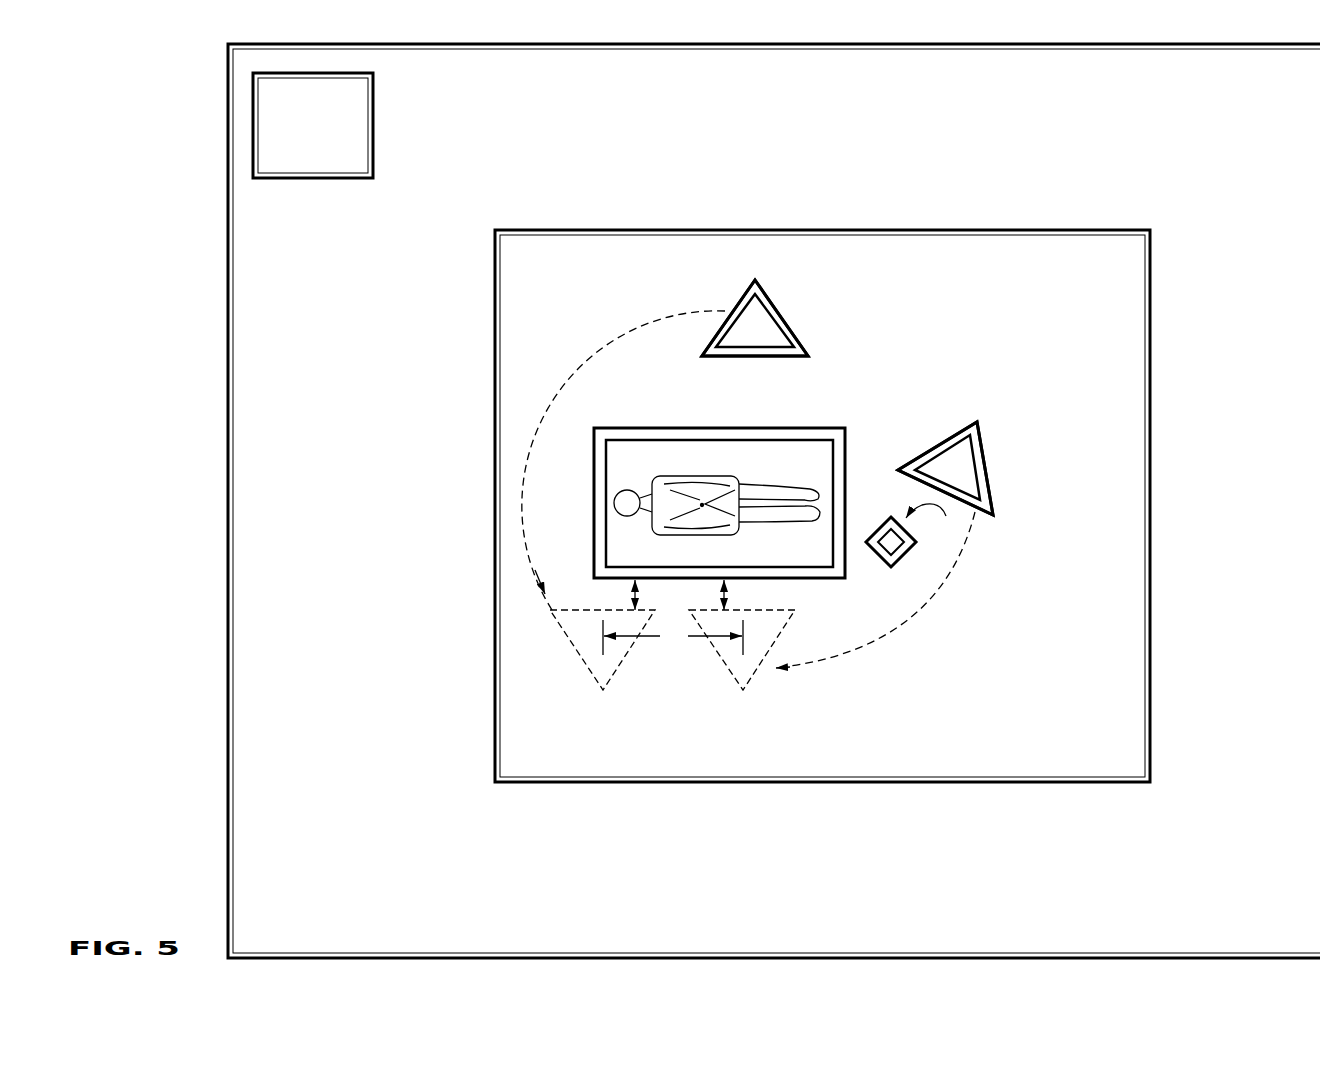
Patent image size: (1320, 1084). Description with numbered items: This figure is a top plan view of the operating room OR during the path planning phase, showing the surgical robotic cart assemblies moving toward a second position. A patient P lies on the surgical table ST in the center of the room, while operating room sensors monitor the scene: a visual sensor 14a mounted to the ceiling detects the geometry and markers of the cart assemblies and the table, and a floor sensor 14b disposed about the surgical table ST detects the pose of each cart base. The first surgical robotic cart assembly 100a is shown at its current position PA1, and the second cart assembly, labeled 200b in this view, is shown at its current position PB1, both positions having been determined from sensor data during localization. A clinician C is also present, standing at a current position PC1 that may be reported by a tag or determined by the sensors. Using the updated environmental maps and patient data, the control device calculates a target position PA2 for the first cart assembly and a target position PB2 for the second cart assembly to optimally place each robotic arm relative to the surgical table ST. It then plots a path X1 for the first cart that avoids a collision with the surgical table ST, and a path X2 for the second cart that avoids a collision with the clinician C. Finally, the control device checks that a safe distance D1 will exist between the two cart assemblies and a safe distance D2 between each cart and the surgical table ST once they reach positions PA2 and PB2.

The operating room OR is at (774, 501).
The visual sensor 14a is at (378, 118).
The floor sensor 14b is at (1156, 345).
The surgical table ST is at (818, 455).
The patient P is at (690, 488).
The first surgical robotic cart assembly 100a is at (766, 294).
The current position of first surgical robotic cart assembly PA1 is at (795, 320).
The second robotic arm / second marker 200b is at (990, 465).
The current position of second surgical robotic cart assembly PB1 is at (984, 433).
The current position of clinician PC1 is at (878, 523).
The clinician C is at (928, 525).
The path of first surgical robotic cart assembly X1 is at (590, 356).
The path of second surgical robotic cart assembly X2 is at (913, 622).
The second target position of first surgical robotic cart assembly PA2 is at (596, 678).
The second target position of second surgical robotic cart assembly PB2 is at (748, 680).
The safe distance between cart assemblies D1 is at (673, 637).
The safe distance between cart assembly and surgical table D2 is at (696, 595).